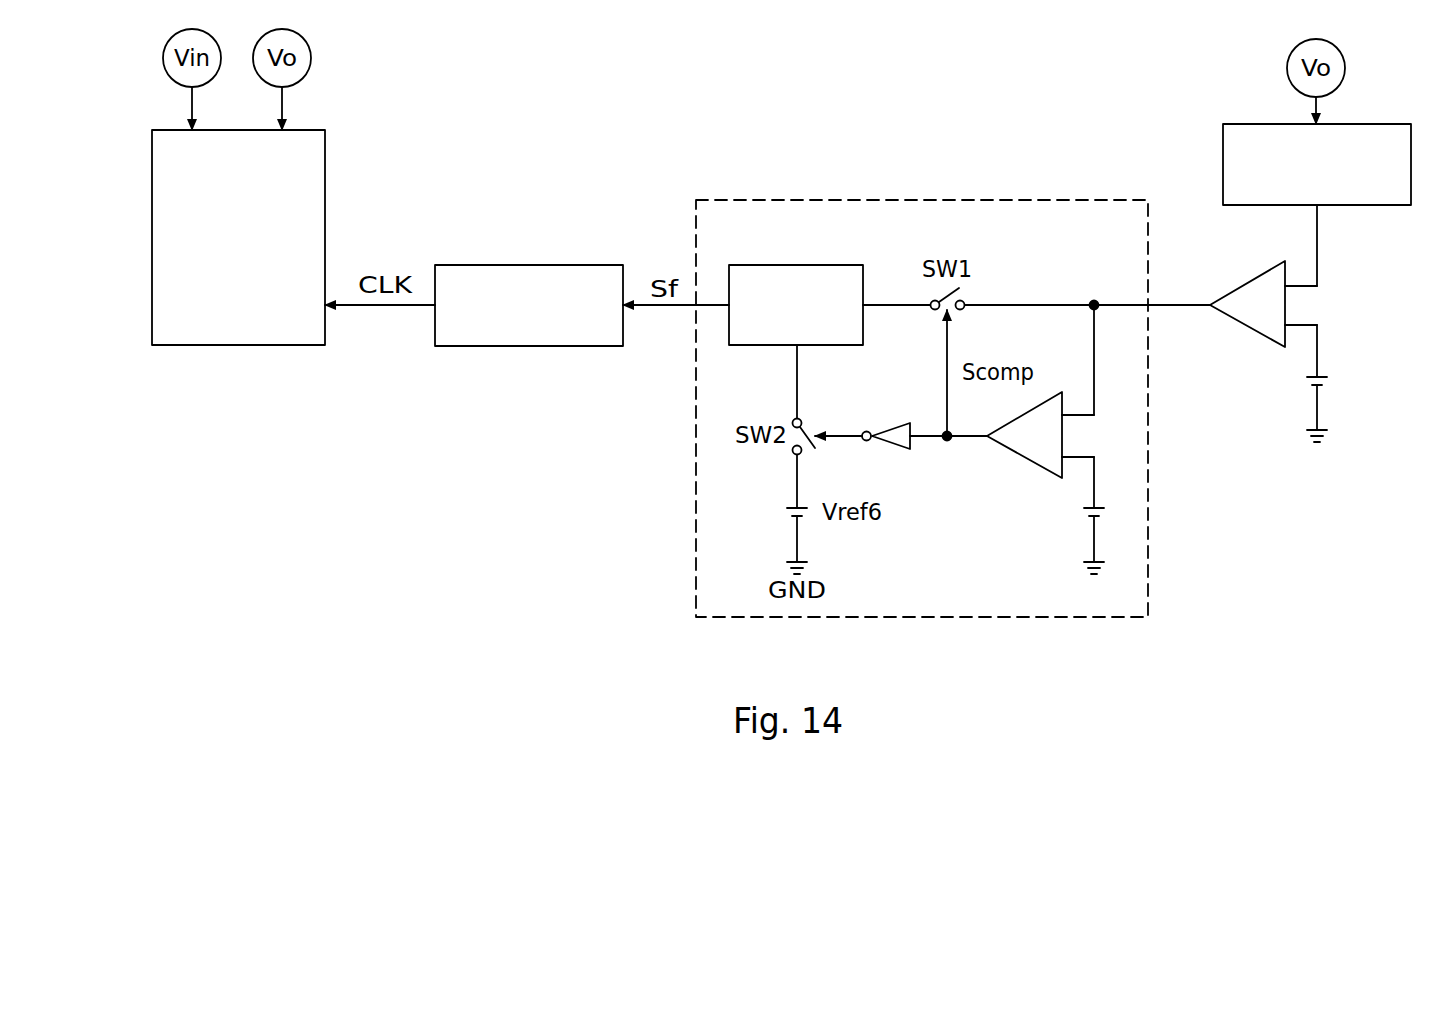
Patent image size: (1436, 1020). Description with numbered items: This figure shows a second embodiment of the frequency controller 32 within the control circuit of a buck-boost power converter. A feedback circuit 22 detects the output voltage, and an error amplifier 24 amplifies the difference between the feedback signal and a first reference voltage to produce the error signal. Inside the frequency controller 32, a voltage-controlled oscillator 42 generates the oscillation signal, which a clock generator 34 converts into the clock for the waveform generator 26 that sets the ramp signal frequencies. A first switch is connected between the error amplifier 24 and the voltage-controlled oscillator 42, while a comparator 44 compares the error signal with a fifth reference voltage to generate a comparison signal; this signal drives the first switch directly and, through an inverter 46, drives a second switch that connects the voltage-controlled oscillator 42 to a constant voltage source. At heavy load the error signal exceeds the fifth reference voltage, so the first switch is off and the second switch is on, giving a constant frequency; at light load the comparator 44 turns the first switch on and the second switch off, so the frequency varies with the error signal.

The feedback circuit 22 is at (1223, 165).
The error amplifier 24 is at (1250, 330).
The waveform generator 26 is at (325, 236).
The frequency controller 32 is at (697, 408).
The clock generator 34 is at (527, 265).
The voltage-controlled oscillator 42 is at (800, 265).
The comparator 44 is at (1022, 458).
The inverter 46 is at (863, 431).